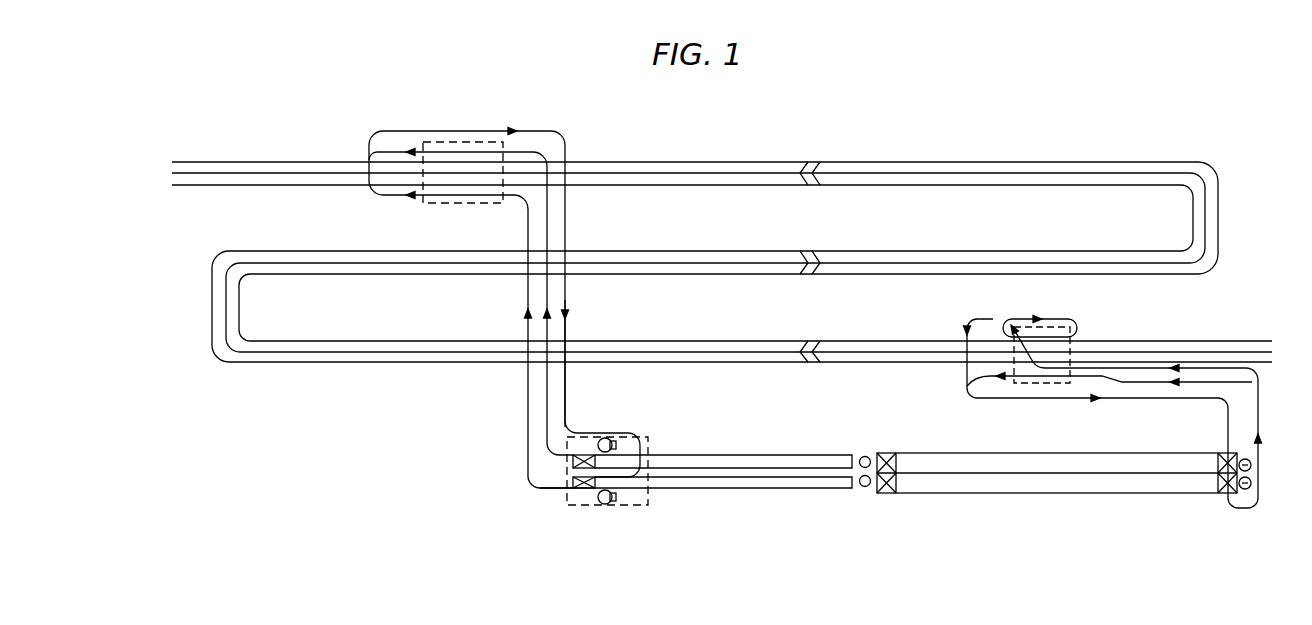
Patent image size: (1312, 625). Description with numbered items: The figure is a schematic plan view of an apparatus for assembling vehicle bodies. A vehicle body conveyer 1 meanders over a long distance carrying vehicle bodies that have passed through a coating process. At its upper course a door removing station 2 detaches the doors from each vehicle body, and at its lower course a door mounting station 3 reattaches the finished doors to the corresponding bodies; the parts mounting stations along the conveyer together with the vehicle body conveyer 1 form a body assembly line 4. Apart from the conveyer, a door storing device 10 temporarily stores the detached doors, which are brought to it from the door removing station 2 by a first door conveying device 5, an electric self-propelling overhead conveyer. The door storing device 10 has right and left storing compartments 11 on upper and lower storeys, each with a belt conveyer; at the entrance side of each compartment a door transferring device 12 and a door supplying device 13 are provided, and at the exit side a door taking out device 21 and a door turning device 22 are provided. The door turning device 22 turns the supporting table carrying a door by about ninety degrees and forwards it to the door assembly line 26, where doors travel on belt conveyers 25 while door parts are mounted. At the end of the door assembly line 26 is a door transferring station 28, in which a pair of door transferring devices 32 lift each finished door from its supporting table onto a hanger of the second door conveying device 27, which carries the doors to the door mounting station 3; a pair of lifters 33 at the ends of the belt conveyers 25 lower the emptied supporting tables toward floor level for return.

The vehicle body conveyer 1 is at (1151, 341).
The door removing station 2 is at (1063, 318).
The door mounting station 3 is at (472, 140).
The body assembly line 4 is at (919, 154).
The first door conveying device 5 is at (951, 388).
The door storing device 10 is at (1112, 497).
The storing compartments 11 is at (1056, 490).
The door transferring device 12 is at (1252, 467).
The door supplying device 13 is at (1218, 462).
The door taking out device 21 is at (896, 460).
The door turning device 22 is at (860, 486).
The belt conveyers 25 is at (756, 468).
The door assembly line 26 is at (746, 498).
The second door conveying device 27 is at (514, 301).
The door transferring station 28 is at (648, 498).
The door transferring devices 32 is at (614, 450).
The lifters 33 is at (572, 482).